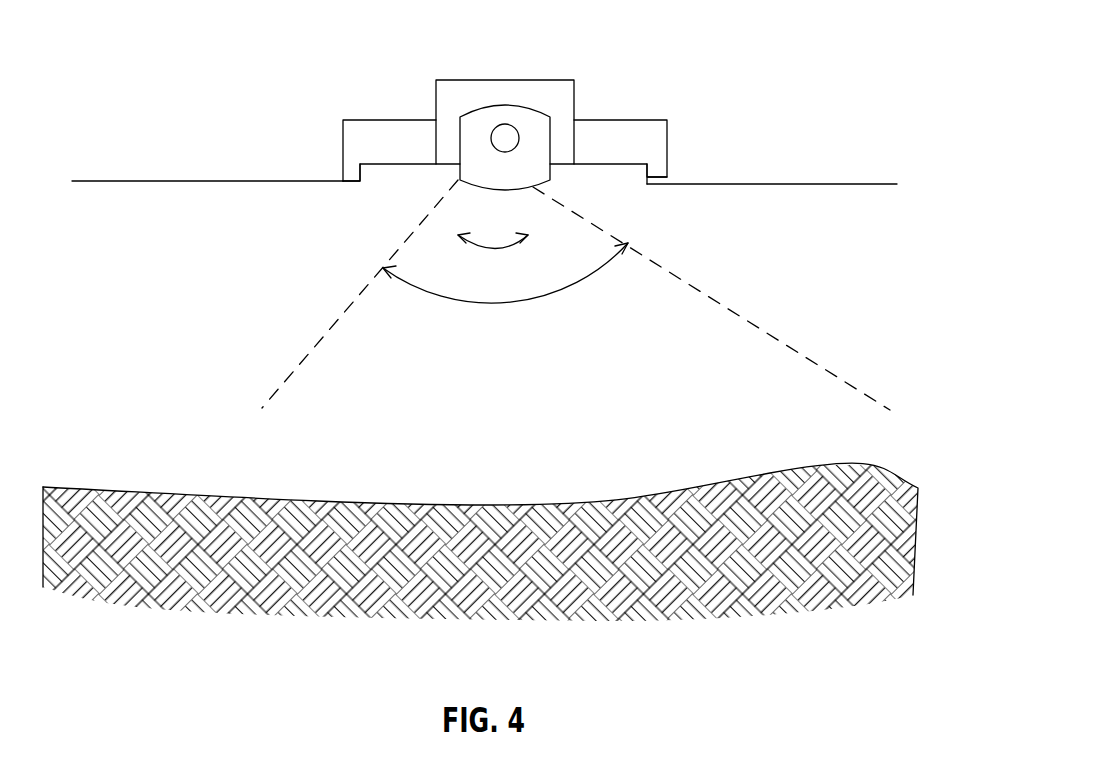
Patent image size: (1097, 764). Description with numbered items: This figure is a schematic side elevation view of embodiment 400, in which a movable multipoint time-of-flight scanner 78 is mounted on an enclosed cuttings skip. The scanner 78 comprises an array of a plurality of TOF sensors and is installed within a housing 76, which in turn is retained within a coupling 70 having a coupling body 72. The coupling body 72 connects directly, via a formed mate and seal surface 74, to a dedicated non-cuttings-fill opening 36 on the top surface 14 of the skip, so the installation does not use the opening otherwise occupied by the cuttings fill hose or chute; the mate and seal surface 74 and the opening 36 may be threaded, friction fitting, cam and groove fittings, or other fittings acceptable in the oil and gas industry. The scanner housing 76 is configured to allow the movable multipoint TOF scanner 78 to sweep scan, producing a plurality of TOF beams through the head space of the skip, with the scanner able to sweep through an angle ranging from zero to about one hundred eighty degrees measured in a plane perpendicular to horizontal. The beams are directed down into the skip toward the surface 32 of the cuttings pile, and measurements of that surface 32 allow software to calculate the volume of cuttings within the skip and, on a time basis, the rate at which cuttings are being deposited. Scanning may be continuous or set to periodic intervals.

The embodiment 400 is at (852, 42).
The top surface 14 is at (138, 180).
The surface 32 is at (702, 492).
The non-fill opening 36 is at (362, 181).
The coupling 70 is at (543, 144).
The coupling body 72 is at (646, 128).
The mate and seal surface 74 is at (653, 172).
The housing 76 is at (575, 92).
The movable multipoint TOF scanner 78 is at (533, 188).